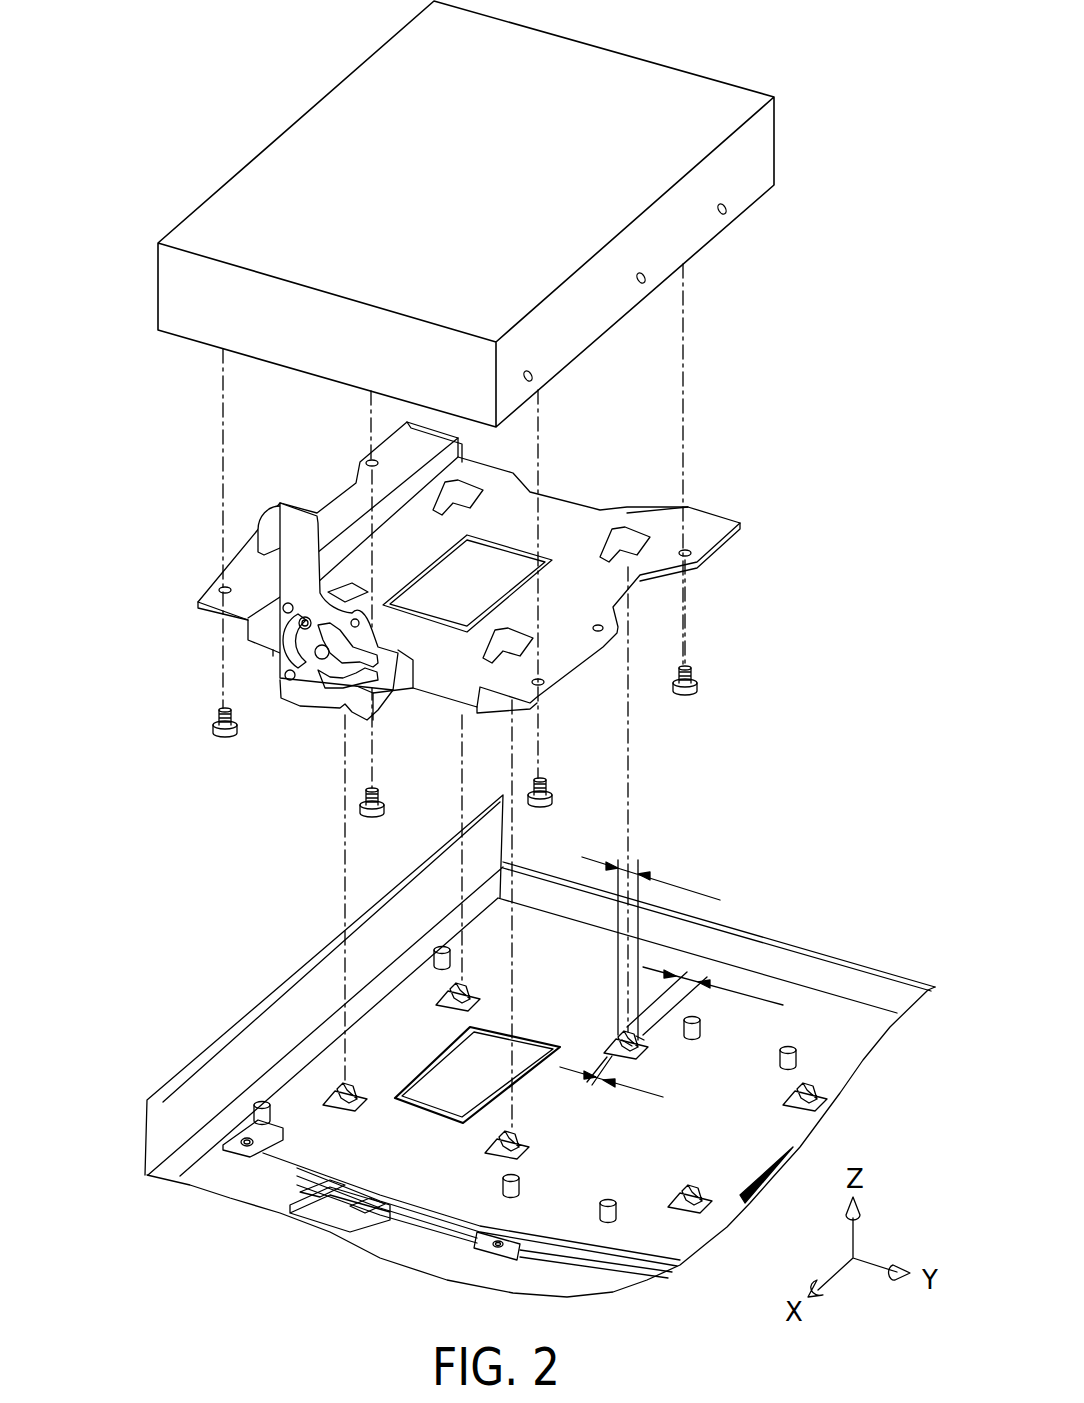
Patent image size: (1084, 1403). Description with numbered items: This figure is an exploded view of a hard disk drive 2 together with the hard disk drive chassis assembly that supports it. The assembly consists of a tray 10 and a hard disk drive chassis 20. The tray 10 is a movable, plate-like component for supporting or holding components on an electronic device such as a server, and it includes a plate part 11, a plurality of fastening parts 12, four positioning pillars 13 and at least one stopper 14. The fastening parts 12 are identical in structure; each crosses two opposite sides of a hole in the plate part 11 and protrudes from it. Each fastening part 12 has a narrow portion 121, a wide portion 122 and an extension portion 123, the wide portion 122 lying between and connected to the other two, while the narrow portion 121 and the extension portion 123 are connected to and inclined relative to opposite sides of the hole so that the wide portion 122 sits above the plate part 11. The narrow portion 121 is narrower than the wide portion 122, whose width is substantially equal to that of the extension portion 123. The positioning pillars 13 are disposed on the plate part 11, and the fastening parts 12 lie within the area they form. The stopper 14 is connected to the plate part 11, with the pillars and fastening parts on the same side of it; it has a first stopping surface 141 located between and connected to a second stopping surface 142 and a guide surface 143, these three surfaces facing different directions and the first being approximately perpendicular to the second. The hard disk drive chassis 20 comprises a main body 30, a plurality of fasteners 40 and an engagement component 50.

The hard disk drive 2 is at (621, 83).
The tray 10 is at (501, 1064).
The plate part 11 is at (390, 1260).
The fastening part 12 is at (528, 1034).
The positioning pillar 13 is at (442, 947).
The stopper 14 is at (451, 1198).
The hard disk drive chassis 20 is at (441, 595).
The main body 30 is at (723, 548).
The fastener 40 is at (213, 736).
The engagement component 50 is at (307, 672).
The narrow portion 121 is at (630, 1053).
The wide portion 122 is at (598, 1035).
The extension portion 123 is at (643, 1035).
The first stopping surface 141 is at (343, 1200).
The second stopping surface 142 is at (328, 1186).
The guide surface 143 is at (365, 1213).